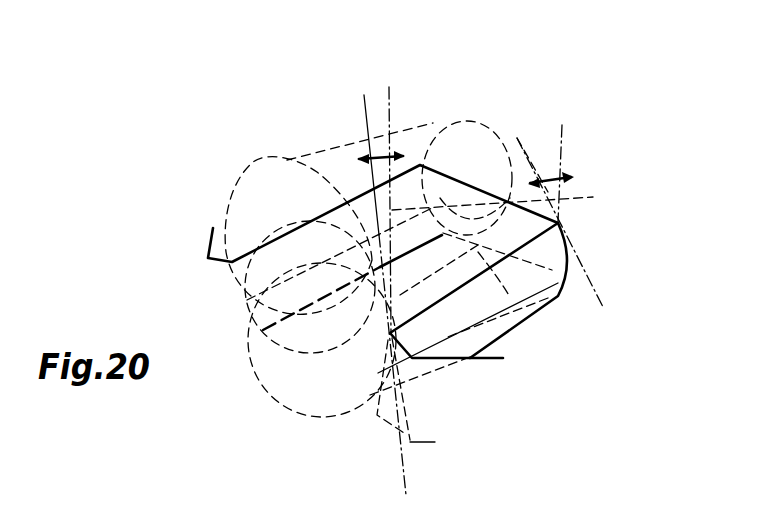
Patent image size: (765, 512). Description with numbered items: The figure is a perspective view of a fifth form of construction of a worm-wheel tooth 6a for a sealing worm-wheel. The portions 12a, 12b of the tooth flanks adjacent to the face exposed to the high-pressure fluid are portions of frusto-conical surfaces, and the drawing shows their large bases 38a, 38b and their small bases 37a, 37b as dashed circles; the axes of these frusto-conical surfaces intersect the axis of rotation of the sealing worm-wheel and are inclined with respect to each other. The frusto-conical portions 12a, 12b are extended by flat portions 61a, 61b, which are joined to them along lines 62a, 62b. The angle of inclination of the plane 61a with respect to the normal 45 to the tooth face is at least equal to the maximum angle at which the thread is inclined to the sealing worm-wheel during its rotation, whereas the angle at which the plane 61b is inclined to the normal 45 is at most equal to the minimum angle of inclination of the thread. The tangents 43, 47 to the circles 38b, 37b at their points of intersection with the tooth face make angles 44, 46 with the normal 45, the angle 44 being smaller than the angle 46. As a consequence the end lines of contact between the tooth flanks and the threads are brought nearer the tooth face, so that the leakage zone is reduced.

The portion of tooth flank 12a is at (277, 263).
The portion of tooth flank 12b is at (457, 315).
The large base 38a is at (237, 190).
The large base 38b is at (282, 394).
The worm-wheel tooth 6a is at (350, 265).
The small base 37a is at (497, 137).
The small base 37b is at (545, 199).
The angle 44 is at (368, 150).
The normal 45 is at (393, 103).
The angle 46 is at (547, 175).
The tangent 47 is at (601, 300).
The tangent 43 is at (403, 462).
The flat portion 61a is at (263, 315).
The flat portion 61b is at (392, 373).
The line 62a is at (283, 282).
The line 62b is at (457, 342).